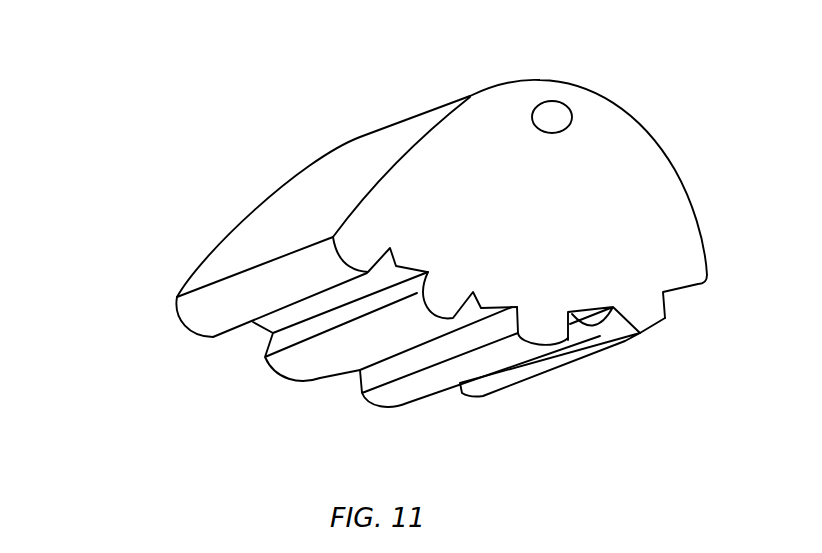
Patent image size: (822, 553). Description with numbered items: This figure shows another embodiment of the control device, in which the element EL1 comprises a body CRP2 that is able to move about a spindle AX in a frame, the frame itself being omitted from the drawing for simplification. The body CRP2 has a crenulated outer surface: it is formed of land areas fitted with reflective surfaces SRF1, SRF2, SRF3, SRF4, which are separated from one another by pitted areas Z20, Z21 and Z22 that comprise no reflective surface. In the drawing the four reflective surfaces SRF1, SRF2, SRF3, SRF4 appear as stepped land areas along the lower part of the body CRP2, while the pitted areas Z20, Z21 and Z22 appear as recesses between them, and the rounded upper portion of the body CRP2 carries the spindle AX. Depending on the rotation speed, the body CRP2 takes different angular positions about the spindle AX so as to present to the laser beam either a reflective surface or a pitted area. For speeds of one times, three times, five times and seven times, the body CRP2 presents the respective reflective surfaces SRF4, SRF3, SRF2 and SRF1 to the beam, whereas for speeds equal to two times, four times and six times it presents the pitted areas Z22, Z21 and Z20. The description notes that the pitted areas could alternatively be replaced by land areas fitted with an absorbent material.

The element EL1 is at (362, 134).
The spindle AX is at (551, 119).
The body CRP2 is at (640, 147).
The pitted area Z20 is at (400, 250).
The pitted area Z21 is at (483, 290).
The pitted area Z22 is at (607, 307).
The reflective surface SRF1 is at (203, 317).
The reflective surface SRF2 is at (285, 367).
The reflective surface SRF3 is at (386, 402).
The reflective surface SRF4 is at (498, 388).